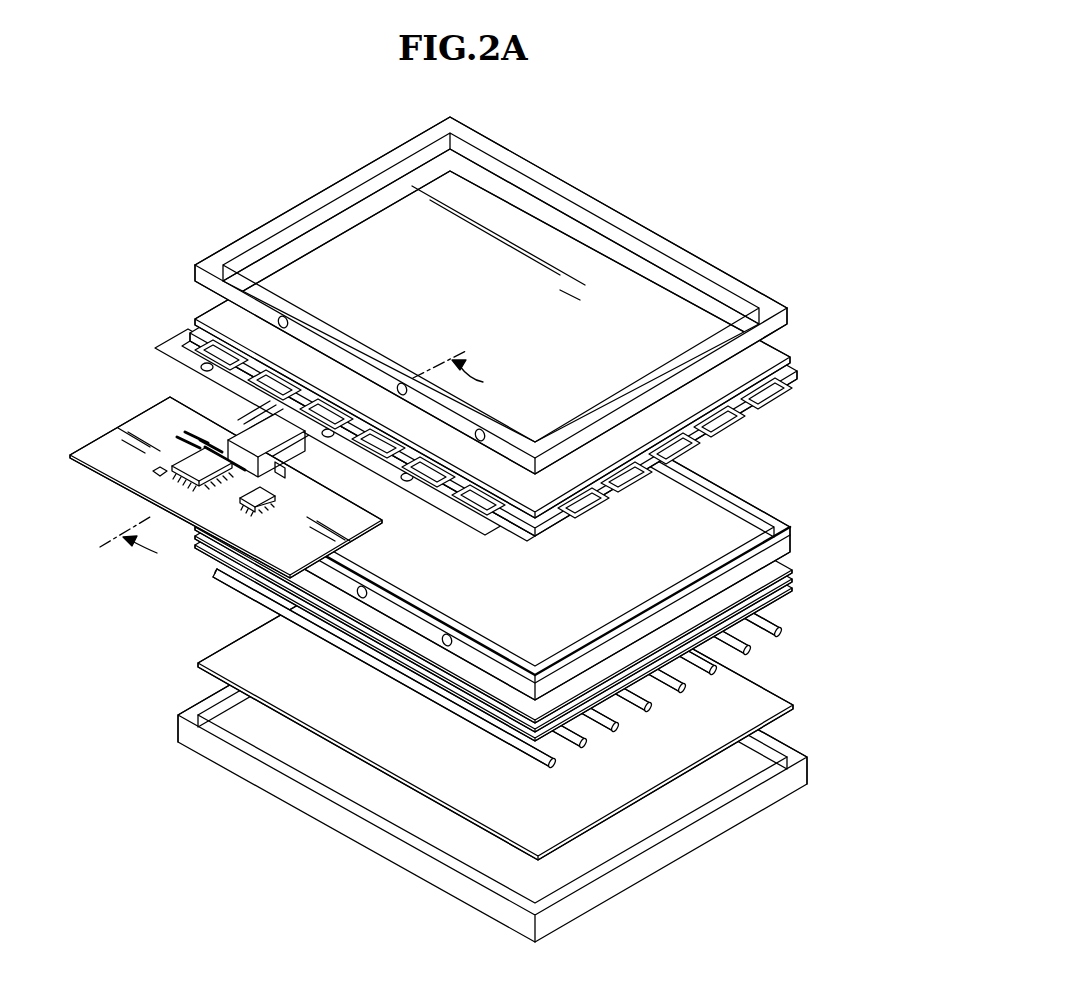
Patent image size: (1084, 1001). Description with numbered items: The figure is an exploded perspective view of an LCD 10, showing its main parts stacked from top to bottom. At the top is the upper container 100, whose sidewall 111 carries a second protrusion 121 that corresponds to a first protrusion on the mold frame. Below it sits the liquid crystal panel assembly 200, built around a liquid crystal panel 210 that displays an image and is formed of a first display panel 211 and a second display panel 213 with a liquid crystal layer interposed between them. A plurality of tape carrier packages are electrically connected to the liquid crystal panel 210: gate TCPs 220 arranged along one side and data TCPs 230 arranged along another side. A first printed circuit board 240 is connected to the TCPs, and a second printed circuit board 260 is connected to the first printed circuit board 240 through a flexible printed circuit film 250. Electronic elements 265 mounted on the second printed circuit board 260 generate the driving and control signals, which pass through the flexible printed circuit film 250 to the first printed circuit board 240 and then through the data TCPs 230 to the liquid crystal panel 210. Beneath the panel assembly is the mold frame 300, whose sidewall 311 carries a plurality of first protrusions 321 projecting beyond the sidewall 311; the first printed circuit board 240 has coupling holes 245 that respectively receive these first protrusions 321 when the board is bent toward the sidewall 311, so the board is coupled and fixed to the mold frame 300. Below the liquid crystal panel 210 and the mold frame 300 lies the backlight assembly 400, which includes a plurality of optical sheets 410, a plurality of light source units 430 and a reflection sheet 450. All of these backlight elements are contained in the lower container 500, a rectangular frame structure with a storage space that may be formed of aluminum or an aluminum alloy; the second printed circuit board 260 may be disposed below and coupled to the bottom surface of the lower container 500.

The LCD 10 is at (714, 149).
The upper container 100 is at (505, 295).
The sidewall of the upper container 111 is at (497, 420).
The second protrusion 121 is at (392, 382).
The liquid crystal panel assembly 200 is at (170, 296).
The liquid crystal panel 210 is at (575, 353).
The first display panel 211 is at (549, 356).
The second display panel 213 is at (790, 354).
The tape carrier packages 220 is at (745, 422).
The tape carrier packages 230 is at (188, 332).
The first printed circuit board 240 is at (297, 451).
The coupling holes 245 is at (407, 482).
The flexible printed circuit film 250 is at (232, 412).
The second printed circuit board 260 is at (220, 484).
The electronic elements 265 is at (190, 470).
The mold frame 300 is at (534, 543).
The sidewall of the mold frame 311 is at (487, 662).
The first protrusions 321 is at (443, 647).
The backlight assembly 400 is at (561, 619).
The optical sheets 410 is at (800, 565).
The light source units 430 is at (784, 632).
The reflection sheet 450 is at (770, 691).
The lower container 500 is at (805, 768).